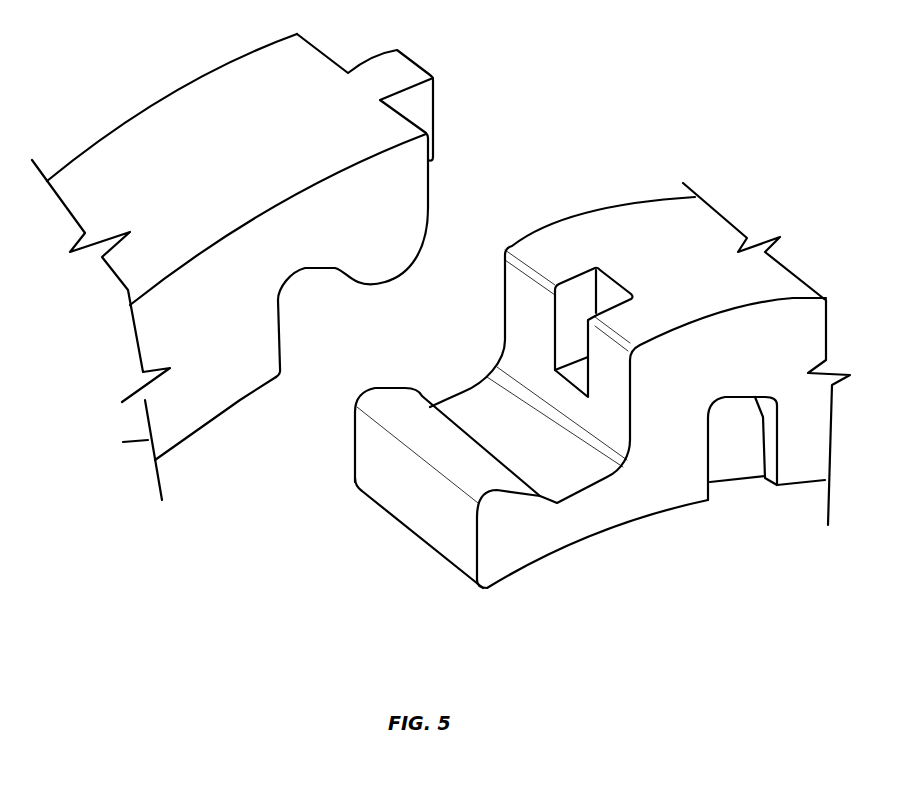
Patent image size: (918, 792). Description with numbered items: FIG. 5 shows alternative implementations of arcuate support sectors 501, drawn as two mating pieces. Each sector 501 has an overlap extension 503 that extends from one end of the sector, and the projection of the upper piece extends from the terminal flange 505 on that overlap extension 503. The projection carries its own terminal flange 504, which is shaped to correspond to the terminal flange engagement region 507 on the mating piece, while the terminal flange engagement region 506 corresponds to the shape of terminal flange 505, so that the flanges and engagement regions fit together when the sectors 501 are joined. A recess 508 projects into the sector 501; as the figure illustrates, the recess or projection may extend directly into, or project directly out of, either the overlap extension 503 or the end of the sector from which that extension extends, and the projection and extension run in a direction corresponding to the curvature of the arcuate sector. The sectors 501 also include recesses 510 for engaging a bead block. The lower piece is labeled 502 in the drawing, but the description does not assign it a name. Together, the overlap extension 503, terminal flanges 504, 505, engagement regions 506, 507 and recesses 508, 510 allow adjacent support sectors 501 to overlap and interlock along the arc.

The sector 501 is at (152, 190).
The base portion 502 is at (545, 547).
The overlap extension 503 is at (228, 82).
The terminal flange 504 is at (427, 430).
The terminal flange 505 is at (400, 248).
The terminal flange engagement region 506 is at (455, 390).
The terminal flange engagement region 507 is at (307, 280).
The recess 508 is at (583, 290).
The recess 510 is at (733, 448).